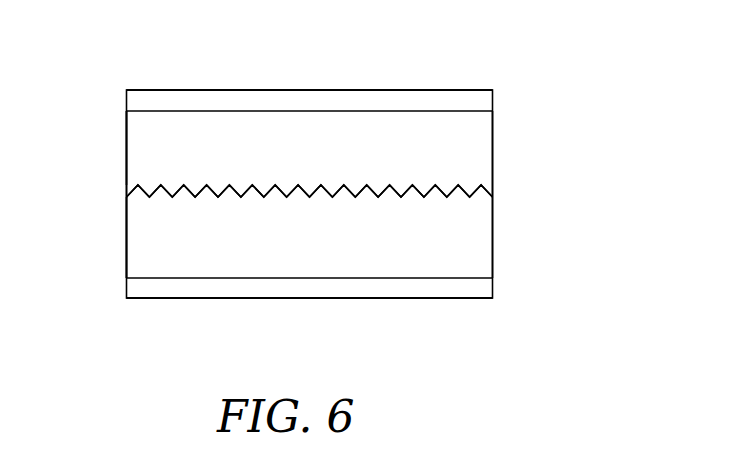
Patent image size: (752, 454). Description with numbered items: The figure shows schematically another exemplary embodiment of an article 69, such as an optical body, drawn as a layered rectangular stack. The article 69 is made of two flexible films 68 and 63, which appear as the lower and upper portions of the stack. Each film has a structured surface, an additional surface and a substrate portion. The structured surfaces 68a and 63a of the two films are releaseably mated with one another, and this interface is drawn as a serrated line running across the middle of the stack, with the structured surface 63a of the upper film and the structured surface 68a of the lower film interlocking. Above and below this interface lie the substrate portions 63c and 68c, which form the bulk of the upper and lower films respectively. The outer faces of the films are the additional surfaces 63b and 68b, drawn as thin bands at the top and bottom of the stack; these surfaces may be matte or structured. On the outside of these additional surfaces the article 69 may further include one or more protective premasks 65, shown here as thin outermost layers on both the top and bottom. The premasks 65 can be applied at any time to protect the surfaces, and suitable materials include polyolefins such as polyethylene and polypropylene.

The flexible film 63 is at (478, 133).
The structured surface 63a is at (350, 186).
The additional surface 63b is at (264, 111).
The substrate portion 63c is at (142, 147).
The protective premask 65 is at (197, 90).
The flexible film 68 is at (478, 237).
The structured surface 68a is at (256, 197).
The additional surface 68b is at (340, 278).
The substrate portion 68c is at (142, 237).
The article 69 is at (585, 168).